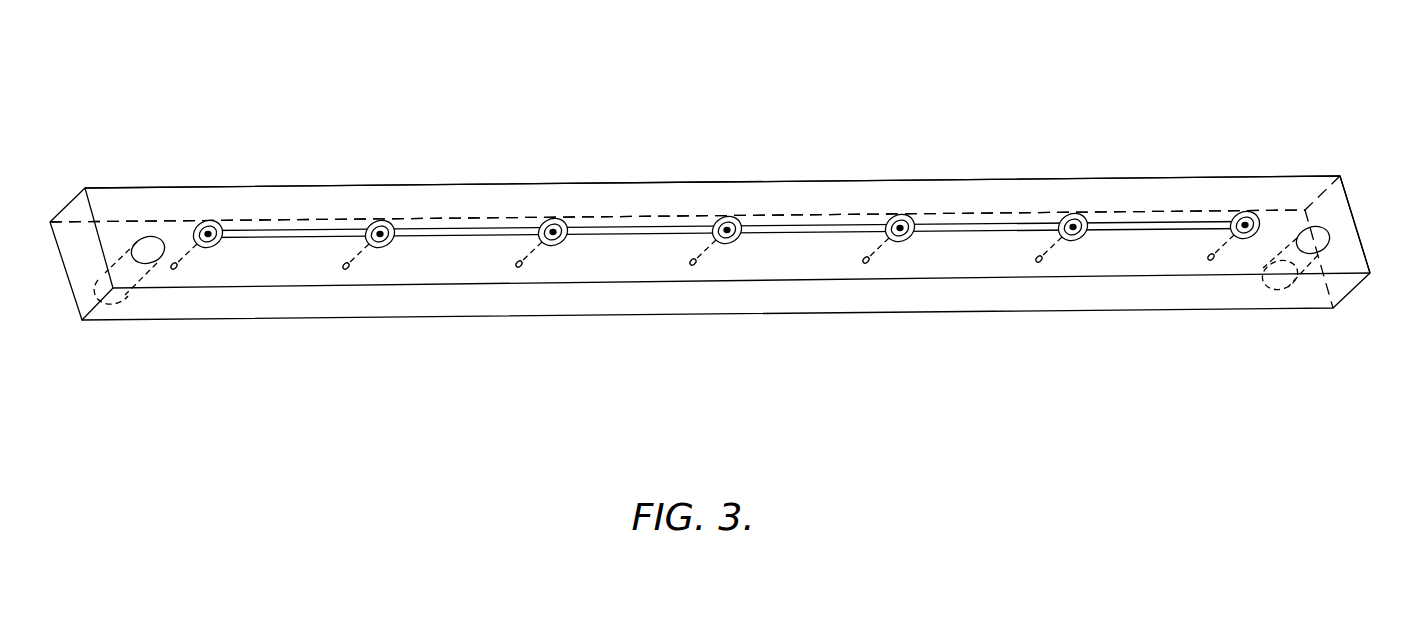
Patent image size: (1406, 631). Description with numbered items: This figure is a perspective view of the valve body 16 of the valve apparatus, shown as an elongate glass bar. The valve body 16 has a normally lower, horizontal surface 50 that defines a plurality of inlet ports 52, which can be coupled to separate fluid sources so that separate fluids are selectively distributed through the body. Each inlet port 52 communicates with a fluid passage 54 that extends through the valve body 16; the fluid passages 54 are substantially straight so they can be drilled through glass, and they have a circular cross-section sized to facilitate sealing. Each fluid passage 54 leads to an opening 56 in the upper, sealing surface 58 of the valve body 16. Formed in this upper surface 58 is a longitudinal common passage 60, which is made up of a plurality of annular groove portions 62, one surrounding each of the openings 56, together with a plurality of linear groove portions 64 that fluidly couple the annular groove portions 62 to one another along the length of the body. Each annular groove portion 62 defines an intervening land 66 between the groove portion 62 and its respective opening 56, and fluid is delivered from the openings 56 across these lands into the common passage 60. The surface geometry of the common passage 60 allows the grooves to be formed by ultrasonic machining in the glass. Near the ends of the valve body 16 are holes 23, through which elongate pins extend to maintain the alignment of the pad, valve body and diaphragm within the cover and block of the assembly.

The valve body 16 is at (1073, 61).
The holes 23 is at (1320, 236).
The lower horizontal surface 50 is at (642, 272).
The inlet ports 52 is at (346, 268).
The fluid passages 54 is at (369, 250).
The openings 56 is at (560, 224).
The upper sealing surface 58 is at (806, 181).
The common passage 60 is at (995, 216).
The annular groove portions 62 is at (1246, 211).
The linear groove portions 64 is at (1147, 223).
The intervening land 66 is at (908, 219).